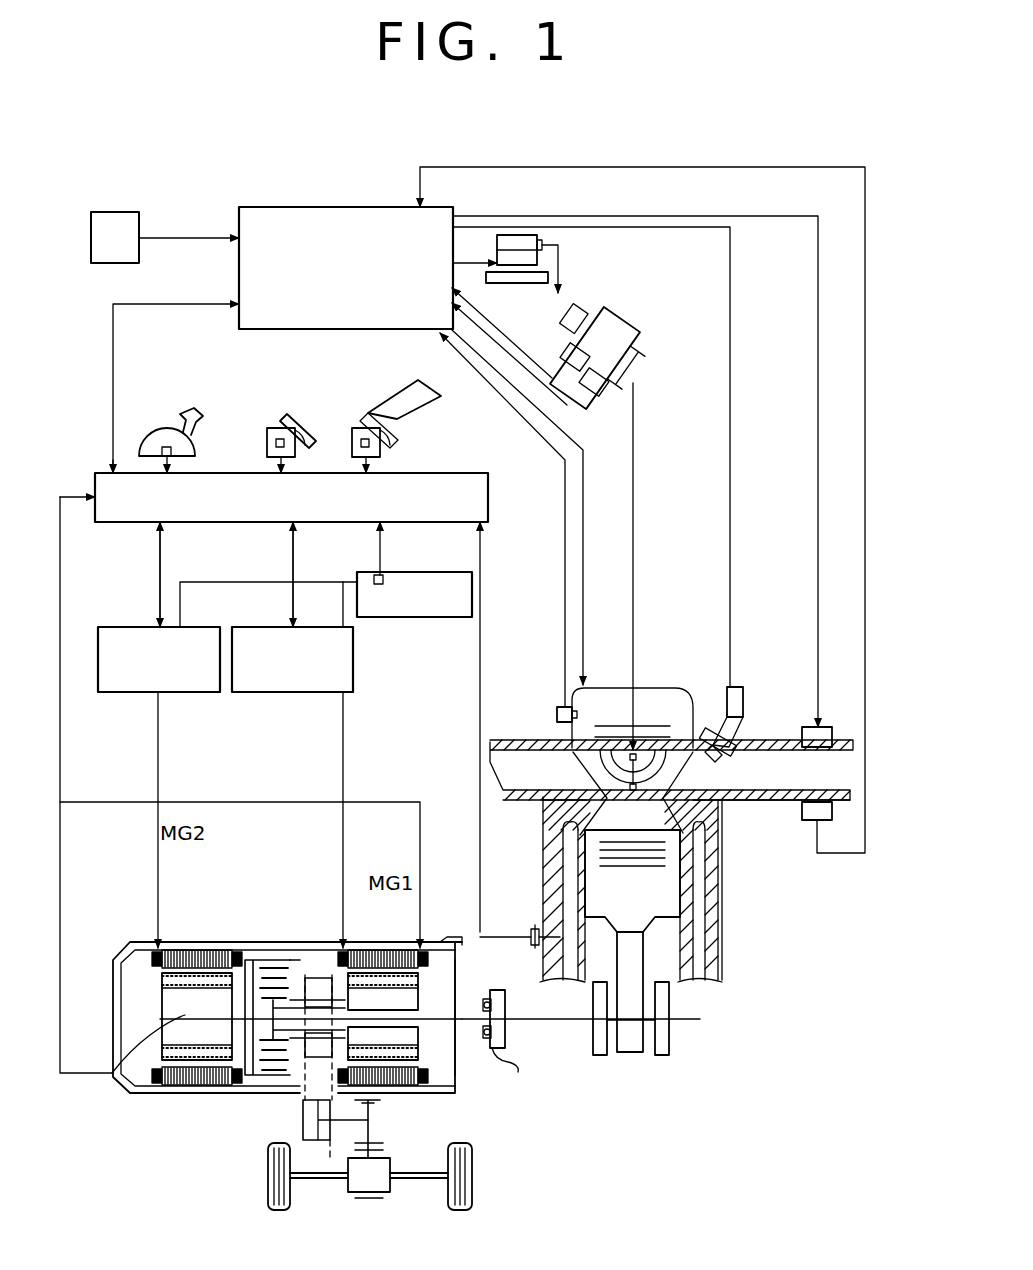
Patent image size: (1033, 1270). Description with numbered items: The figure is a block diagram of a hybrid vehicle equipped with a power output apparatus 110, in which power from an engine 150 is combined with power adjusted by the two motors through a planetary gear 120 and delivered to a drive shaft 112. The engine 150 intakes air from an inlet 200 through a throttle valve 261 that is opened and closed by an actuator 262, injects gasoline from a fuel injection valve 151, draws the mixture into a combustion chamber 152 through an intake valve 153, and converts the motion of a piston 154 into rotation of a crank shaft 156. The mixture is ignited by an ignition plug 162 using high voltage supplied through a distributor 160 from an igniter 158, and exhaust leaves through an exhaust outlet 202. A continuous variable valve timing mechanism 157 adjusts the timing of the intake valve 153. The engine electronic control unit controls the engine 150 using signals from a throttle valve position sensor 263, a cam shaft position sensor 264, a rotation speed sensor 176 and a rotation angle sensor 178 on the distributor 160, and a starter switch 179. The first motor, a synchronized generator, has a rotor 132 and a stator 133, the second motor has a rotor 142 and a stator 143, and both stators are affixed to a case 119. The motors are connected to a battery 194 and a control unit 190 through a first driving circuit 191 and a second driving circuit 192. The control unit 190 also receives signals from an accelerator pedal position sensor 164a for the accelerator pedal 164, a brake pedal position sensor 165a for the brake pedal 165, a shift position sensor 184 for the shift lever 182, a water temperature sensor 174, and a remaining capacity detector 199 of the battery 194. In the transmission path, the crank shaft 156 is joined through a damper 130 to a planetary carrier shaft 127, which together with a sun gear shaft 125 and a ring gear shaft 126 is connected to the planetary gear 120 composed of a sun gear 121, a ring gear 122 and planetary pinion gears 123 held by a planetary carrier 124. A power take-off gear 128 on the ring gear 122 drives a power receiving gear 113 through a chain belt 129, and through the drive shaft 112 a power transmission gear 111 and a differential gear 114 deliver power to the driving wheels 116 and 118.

The power output apparatus 110 is at (640, 1130).
The power transmission gear 111 is at (370, 1094).
The drive shaft 112 is at (380, 1143).
The power receiving gear 113 is at (303, 1100).
The differential gear 114 is at (392, 1192).
The driving wheel 116 is at (472, 1175).
The driving wheel 118 is at (268, 1192).
The case 119 is at (145, 1093).
The planetary gear 120 is at (280, 945).
The sun gear 121 is at (280, 880).
The ring gear 122 is at (300, 960).
The planetary pinion gear 123 is at (258, 950).
The planetary carrier 124 is at (258, 968).
The sun gear shaft 125 is at (348, 948).
The ring gear shaft 126 is at (112, 1073).
The planetary carrier shaft 127 is at (462, 1060).
The power take-off gear 128 is at (303, 1097).
The chain belt 129 is at (305, 1130).
The damper 130 is at (524, 1074).
The rotor 132 is at (465, 992).
The stator 133 is at (407, 948).
The rotor 142 is at (160, 1010).
The stator 143 is at (162, 950).
The engine 150 is at (668, 685).
The fuel injection valve 151 is at (770, 674).
The combustion chamber 152 is at (672, 880).
The intake valve 153 is at (760, 775).
The piston 154 is at (665, 910).
The crank shaft 156 is at (573, 1025).
The continuous variable valve timing mechanism 157 is at (633, 660).
The igniter 158 is at (512, 235).
The distributor 160 is at (624, 325).
The ignition plug 162 is at (633, 790).
The accelerator pedal 164 is at (398, 408).
The accelerator pedal position sensor 164a is at (358, 428).
The brake pedal 165 is at (288, 410).
The brake pedal position sensor 165a is at (275, 428).
The water temperature sensor 174 is at (522, 935).
The rotation speed sensor 176 is at (560, 348).
The rotation angle sensor 178 is at (598, 385).
The starter switch 179 is at (112, 212).
The shift lever 182 is at (190, 402).
The shift position sensor 184 is at (155, 435).
The control unit 190 is at (445, 473).
The first driving circuit 191 is at (270, 692).
The second driving circuit 192 is at (198, 627).
The battery 194 is at (425, 617).
The remaining capacity detector 199 is at (375, 576).
The inlet 200 is at (750, 800).
The exhaust outlet 202 is at (520, 750).
The throttle valve 261 is at (815, 820).
The actuator 262 is at (825, 727).
The throttle valve position sensor 263 is at (840, 853).
The cam shaft position sensor 264 is at (562, 707).